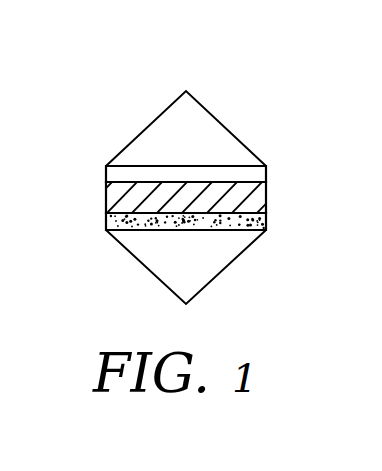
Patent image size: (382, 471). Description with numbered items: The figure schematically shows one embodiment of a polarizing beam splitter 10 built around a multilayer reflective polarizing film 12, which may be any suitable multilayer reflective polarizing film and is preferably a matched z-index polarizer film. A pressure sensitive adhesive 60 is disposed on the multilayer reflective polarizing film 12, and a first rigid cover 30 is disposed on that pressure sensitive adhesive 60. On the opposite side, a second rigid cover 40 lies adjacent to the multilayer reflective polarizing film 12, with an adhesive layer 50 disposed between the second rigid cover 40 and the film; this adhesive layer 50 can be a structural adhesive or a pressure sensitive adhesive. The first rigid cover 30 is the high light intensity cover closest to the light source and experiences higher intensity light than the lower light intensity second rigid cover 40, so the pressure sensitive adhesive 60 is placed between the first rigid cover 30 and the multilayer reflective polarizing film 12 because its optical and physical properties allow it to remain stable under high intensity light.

The polarizing beam splitter 10 is at (247, 105).
The multilayer reflective polarizing film 12 is at (254, 197).
The first rigid cover 30 is at (157, 132).
The second rigid cover 40 is at (218, 258).
The adhesive layer 50 is at (113, 222).
The pressure sensitive adhesive 60 is at (115, 172).